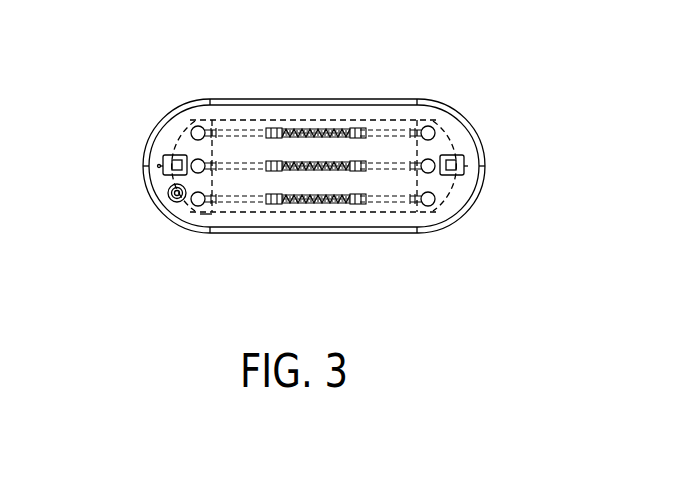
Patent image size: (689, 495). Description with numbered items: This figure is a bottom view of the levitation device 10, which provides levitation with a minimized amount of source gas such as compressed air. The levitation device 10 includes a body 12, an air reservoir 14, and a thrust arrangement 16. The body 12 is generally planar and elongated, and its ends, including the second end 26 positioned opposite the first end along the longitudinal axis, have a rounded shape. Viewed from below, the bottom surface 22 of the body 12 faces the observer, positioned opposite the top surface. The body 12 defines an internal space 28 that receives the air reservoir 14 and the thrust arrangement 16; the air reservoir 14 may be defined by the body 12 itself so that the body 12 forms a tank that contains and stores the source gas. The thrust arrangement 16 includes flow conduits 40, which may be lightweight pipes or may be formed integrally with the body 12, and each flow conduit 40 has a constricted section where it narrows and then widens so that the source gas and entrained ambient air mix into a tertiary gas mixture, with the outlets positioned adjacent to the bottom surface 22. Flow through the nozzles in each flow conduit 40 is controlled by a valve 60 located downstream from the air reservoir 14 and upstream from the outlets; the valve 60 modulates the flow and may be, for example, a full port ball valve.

The levitation device 10 is at (105, 198).
The body 12 is at (457, 110).
The air reservoir 14 is at (193, 124).
The thrust arrangement 16 is at (203, 233).
The bottom surface 22 is at (402, 220).
The second end 26 is at (145, 150).
The internal space 28 is at (487, 148).
The flow conduit 40 is at (378, 130).
The valve 60 is at (172, 172).